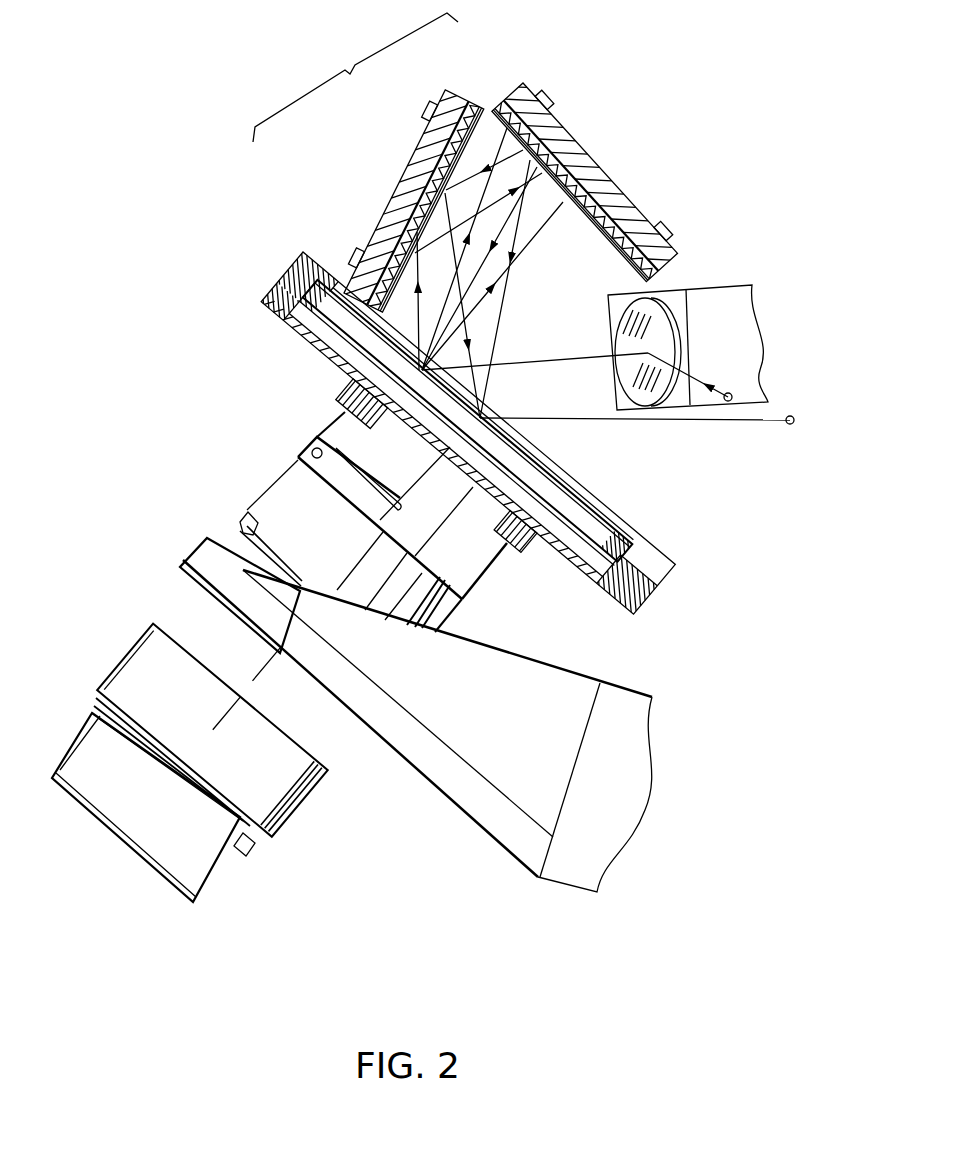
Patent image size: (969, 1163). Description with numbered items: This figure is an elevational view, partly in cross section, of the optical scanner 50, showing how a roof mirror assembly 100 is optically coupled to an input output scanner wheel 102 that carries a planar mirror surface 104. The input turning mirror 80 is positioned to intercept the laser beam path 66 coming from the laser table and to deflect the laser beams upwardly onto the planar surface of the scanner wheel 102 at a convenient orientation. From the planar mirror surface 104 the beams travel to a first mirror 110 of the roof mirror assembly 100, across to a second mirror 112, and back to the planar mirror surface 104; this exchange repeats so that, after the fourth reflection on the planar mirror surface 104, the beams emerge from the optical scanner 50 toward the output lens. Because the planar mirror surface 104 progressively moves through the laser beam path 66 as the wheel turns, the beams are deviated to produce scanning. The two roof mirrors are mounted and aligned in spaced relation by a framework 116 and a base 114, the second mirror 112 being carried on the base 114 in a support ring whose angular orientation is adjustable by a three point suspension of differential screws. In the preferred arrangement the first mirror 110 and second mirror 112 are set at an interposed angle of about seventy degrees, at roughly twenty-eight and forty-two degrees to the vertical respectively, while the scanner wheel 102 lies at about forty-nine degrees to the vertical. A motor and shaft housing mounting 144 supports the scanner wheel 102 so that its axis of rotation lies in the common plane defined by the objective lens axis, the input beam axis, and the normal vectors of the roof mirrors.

The optical scanner 50 is at (355, 77).
The roof mirror assembly 100 is at (541, 70).
The framework 116 is at (389, 188).
The first mirror 110 is at (423, 227).
The base 114 is at (564, 200).
The second mirror 112 is at (603, 237).
The laser beam path 66 is at (538, 362).
The input turning mirror 80 is at (628, 320).
The planar mirror surface 104 is at (600, 507).
The scanner wheel 102 is at (548, 563).
The motor and shaft housing mounting 144 is at (468, 800).